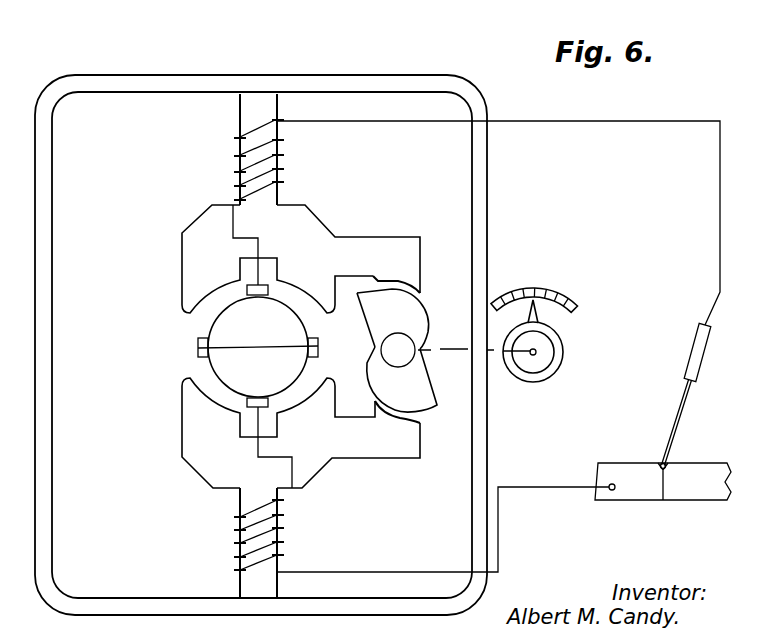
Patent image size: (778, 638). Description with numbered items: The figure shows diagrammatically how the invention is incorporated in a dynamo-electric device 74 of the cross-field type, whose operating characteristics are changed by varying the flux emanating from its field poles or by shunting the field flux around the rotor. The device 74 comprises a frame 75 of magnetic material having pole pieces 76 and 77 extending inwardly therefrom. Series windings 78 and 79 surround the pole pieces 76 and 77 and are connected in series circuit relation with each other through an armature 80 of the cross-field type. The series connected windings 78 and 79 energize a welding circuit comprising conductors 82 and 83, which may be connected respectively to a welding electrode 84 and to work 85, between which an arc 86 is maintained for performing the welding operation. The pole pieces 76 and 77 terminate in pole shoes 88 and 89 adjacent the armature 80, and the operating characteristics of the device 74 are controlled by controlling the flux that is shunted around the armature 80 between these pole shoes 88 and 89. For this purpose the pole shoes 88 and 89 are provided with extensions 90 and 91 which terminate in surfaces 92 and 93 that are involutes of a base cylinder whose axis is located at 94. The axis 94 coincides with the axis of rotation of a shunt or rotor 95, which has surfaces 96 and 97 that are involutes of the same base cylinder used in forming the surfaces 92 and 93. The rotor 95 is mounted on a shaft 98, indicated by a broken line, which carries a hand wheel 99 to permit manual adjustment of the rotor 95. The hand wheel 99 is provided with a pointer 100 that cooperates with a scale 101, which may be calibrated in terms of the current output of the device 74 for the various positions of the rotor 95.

The dynamo-electric device 74 is at (67, 46).
The frame 75 is at (142, 78).
The pole piece 76 is at (244, 143).
The pole piece 77 is at (244, 545).
The series winding 78 is at (282, 153).
The series winding 79 is at (282, 528).
The armature 80 is at (220, 359).
The conductor 82 is at (600, 122).
The conductor 83 is at (540, 487).
The welding electrode 84 is at (688, 412).
The work 85 is at (640, 494).
The arc 86 is at (660, 462).
The pole shoe 88 is at (182, 251).
The pole shoe 89 is at (188, 425).
The extension 90 is at (373, 243).
The extension 91 is at (392, 452).
The surface 92 is at (405, 283).
The surface 93 is at (417, 432).
The axis 94 is at (397, 350).
The shunt or rotor 95 is at (376, 327).
The surface 96 is at (421, 313).
The surface 97 is at (386, 392).
The shaft 98 is at (425, 355).
The hand wheel 99 is at (548, 372).
The pointer 100 is at (538, 316).
The scale 101 is at (565, 300).